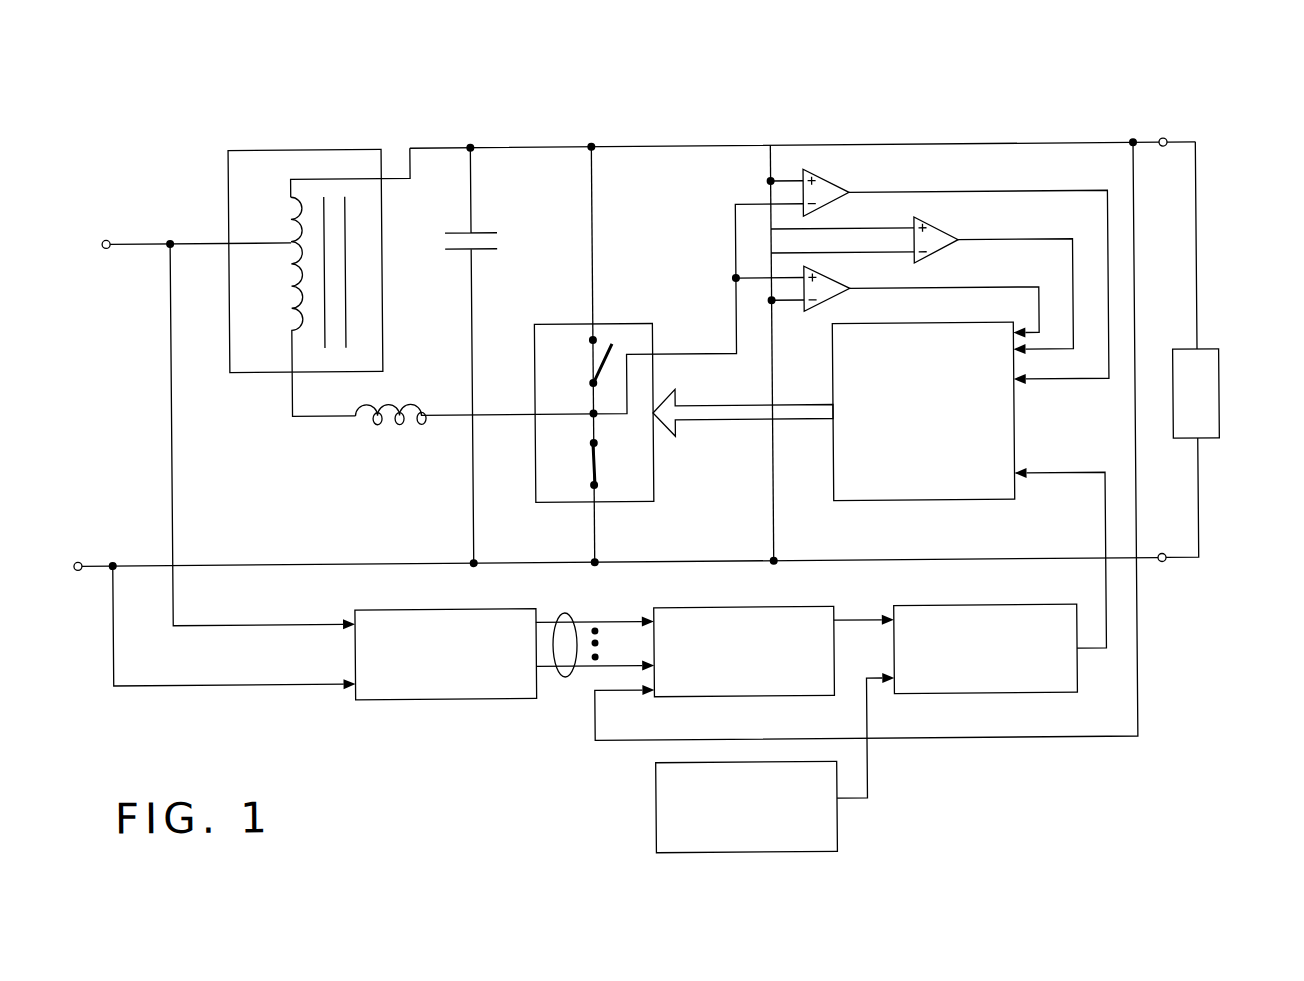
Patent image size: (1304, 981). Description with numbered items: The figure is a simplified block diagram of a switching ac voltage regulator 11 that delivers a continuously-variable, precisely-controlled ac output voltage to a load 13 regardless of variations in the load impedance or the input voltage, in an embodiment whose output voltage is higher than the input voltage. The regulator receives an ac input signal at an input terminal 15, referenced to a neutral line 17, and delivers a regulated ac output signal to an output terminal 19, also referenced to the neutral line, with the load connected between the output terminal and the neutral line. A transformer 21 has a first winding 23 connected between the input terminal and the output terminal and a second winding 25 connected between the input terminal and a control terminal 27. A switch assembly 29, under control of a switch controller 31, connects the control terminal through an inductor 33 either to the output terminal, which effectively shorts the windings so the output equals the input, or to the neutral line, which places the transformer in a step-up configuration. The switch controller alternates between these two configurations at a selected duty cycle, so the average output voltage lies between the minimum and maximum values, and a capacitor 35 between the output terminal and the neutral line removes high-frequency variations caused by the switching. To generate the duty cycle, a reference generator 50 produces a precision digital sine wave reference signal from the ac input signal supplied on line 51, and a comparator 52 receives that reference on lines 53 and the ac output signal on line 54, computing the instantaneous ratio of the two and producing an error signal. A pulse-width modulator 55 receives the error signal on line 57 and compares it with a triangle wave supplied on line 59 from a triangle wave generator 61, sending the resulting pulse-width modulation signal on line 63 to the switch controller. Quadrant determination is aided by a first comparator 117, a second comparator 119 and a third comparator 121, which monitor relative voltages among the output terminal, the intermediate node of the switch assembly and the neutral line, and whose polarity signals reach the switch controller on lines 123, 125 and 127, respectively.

The switching ac voltage regulator 11 is at (714, 122).
The load 13 is at (1217, 444).
The input terminal 15 is at (109, 236).
The neutral line 17 is at (80, 557).
The output terminal 19 is at (1162, 142).
The transformer 21 is at (294, 145).
The first winding 23 is at (292, 215).
The second winding 25 is at (294, 282).
The control terminal 27 is at (314, 414).
The switch assembly 29 is at (558, 329).
The switch controller 31 is at (1016, 453).
The inductor 33 is at (387, 421).
The capacitor 35 is at (463, 232).
The reference generator 50 is at (433, 606).
The line 51 is at (171, 443).
The comparator 52 is at (740, 606).
The lines 53 is at (558, 606).
The line 54 is at (1135, 699).
The pulse-width modulator 55 is at (953, 606).
The line 57 is at (870, 619).
The line 59 is at (864, 770).
The triangle wave generator 61 is at (654, 815).
The line 63 is at (1105, 607).
The first comparator 117 is at (833, 182).
The second comparator 119 is at (830, 284).
The third comparator 121 is at (953, 242).
The line 123 is at (1073, 192).
The line 125 is at (1012, 286).
The line 127 is at (1049, 240).